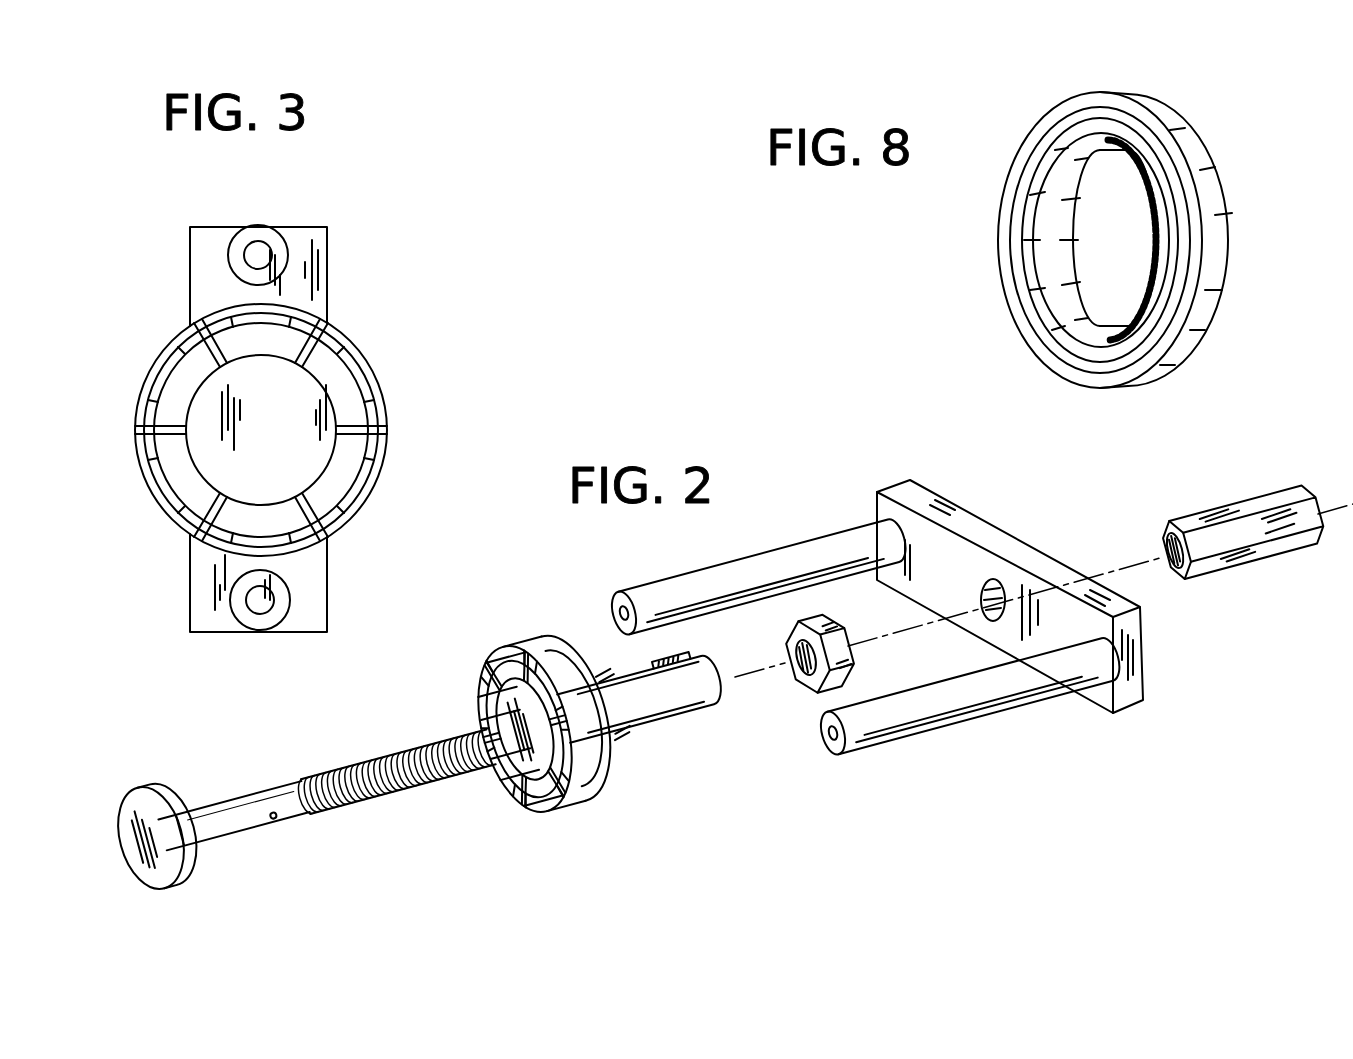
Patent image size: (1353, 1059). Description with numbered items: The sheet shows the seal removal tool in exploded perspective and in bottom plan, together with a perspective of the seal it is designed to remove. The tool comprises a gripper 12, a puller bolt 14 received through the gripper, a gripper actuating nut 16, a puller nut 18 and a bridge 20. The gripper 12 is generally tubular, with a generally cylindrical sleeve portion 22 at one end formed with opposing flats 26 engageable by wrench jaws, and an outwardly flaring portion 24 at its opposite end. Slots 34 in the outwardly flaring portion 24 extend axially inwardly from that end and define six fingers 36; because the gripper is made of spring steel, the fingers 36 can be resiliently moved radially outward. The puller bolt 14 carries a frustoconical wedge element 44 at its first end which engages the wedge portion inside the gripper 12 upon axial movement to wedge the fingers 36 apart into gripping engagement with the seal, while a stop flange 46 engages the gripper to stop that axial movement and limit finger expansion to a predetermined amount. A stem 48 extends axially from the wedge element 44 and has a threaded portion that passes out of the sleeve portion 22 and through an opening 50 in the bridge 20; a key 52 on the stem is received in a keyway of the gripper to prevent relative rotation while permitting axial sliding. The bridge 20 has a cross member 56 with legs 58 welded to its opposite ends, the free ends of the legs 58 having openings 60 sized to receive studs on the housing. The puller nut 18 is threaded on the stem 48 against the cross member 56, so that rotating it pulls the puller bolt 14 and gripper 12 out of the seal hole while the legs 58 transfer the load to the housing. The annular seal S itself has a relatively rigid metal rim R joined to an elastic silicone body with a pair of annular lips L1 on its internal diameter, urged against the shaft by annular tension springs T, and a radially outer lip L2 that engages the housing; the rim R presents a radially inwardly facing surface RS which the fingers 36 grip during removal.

In FIG. 3, the gripper 12 is at (352, 521).
In FIG. 2, the gripper 12 is at (587, 731).
In FIG. 3, the puller bolt 14 is at (338, 400).
In FIG. 2, the puller bolt 14 is at (302, 781).
In FIG. 2, the gripper actuating nut 16 is at (846, 658).
In FIG. 2, the puller nut 18 is at (1318, 560).
In FIG. 3, the bridge 20 is at (333, 240).
In FIG. 2, the bridge 20 is at (1010, 614).
In FIG. 2, the sleeve portion 22 is at (612, 722).
In FIG. 2, the outwardly flaring portion 24 is at (630, 821).
In FIG. 2, the flats 26 is at (688, 666).
In FIG. 3, the slots 34 is at (194, 322).
In FIG. 2, the slots 34 is at (525, 729).
In FIG. 3, the fingers 36 is at (214, 300).
In FIG. 2, the fingers 36 is at (525, 729).
In FIG. 2, the wedge element 44 is at (194, 815).
In FIG. 3, the stop flange 46 is at (196, 420).
In FIG. 2, the stop flange 46 is at (185, 800).
In FIG. 2, the stem 48 is at (266, 797).
In FIG. 2, the opening 50 is at (1000, 590).
In FIG. 2, the key 52 is at (254, 852).
In FIG. 3, the cross member 56 is at (323, 280).
In FIG. 2, the cross member 56 is at (1040, 485).
In FIG. 3, the legs 58 is at (252, 236).
In FIG. 2, the legs 58 is at (733, 568).
In FIG. 3, the openings 60 is at (234, 258).
In FIG. 2, the openings 60 is at (620, 611).
In FIG. 8, the metal rim R is at (1100, 118).
In FIG. 8, the annular seal S is at (1235, 98).
In FIG. 8, the radially inwardly facing surface RS is at (1030, 176).
In FIG. 8, the annular lips L1 is at (1018, 240).
In FIG. 8, the radially outer lip L2 is at (1033, 306).
In FIG. 8, the annular tension springs T is at (1150, 188).